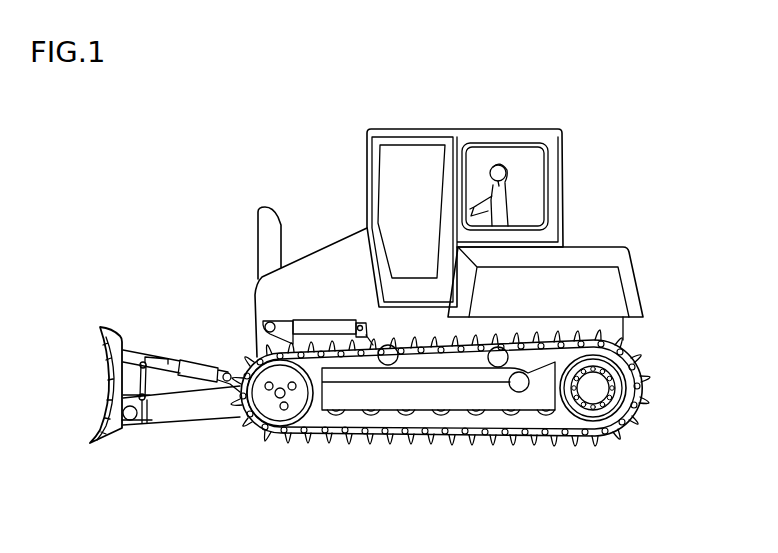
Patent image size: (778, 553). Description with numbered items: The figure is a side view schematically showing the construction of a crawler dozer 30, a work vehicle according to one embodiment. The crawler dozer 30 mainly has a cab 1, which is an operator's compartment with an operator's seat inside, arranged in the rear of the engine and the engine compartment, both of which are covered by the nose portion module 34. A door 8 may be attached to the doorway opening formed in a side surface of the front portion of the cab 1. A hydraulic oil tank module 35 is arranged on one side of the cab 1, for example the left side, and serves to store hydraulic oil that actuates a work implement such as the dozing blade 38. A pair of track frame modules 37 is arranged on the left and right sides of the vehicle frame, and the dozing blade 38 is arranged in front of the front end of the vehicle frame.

The crawler dozer 30 is at (610, 104).
The cab 1 is at (488, 132).
The door 8 is at (413, 170).
The nose portion module 34 is at (316, 290).
The hydraulic oil tank module 35 is at (612, 288).
The track frame module 37 is at (527, 405).
The dozing blade 38 is at (112, 437).